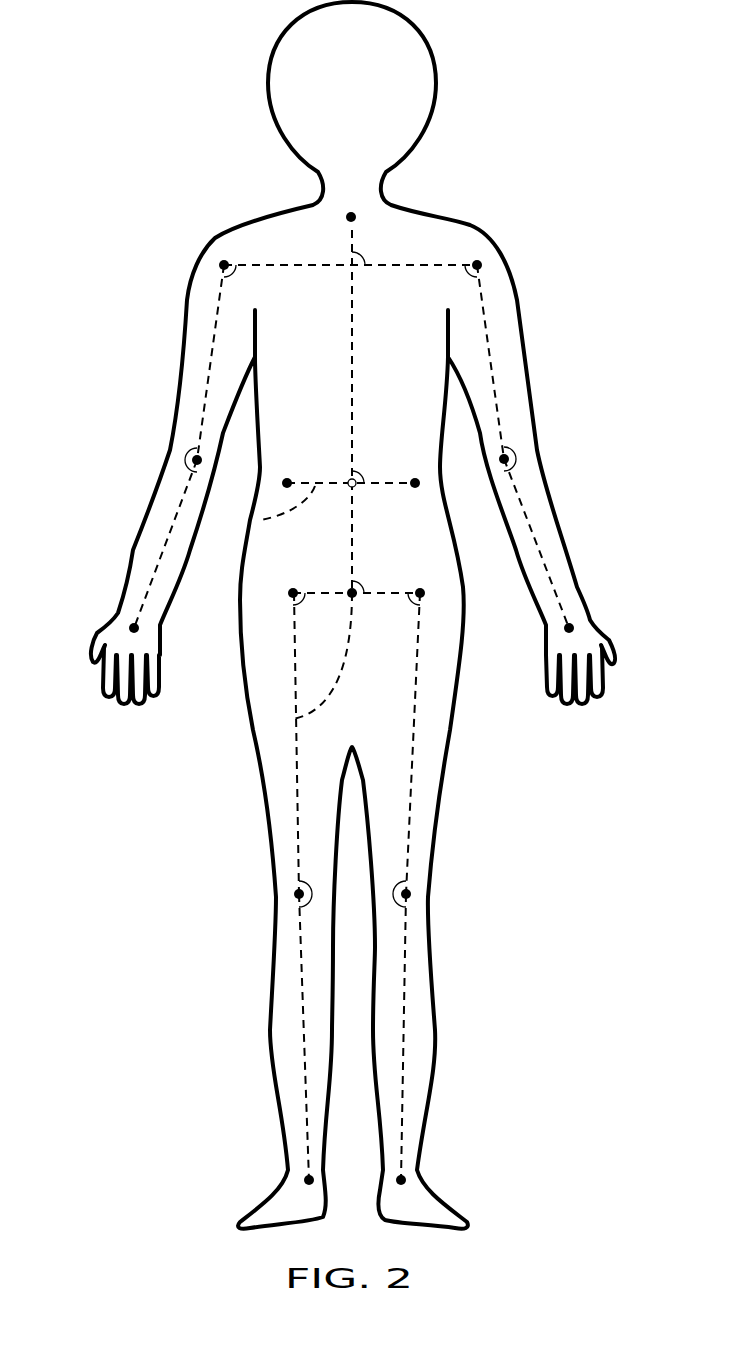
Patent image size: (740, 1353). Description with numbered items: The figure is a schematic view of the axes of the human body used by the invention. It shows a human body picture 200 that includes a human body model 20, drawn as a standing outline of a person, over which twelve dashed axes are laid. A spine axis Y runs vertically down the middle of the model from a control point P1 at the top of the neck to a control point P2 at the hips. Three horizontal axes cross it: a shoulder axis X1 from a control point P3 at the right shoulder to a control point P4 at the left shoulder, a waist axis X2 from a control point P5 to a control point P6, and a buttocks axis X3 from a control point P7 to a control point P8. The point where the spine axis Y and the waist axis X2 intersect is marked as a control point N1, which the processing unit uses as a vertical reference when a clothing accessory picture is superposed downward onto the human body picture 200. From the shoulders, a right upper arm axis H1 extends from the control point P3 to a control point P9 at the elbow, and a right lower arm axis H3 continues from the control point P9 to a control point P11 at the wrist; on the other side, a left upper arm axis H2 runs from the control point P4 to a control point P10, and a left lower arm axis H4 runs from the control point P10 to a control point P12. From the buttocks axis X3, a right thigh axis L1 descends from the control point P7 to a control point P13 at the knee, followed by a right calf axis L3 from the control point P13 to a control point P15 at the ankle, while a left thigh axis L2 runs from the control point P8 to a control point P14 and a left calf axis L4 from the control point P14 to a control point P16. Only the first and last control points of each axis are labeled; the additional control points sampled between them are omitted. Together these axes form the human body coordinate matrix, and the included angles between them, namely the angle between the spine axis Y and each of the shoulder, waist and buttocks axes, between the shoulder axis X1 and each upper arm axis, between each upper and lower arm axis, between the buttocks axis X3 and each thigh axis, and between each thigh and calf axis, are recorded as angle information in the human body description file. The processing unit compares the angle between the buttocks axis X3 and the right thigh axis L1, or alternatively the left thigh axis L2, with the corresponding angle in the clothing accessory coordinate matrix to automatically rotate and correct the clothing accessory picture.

The human body model 20 is at (469, 43).
The human body picture 200 is at (630, 1219).
The control point P1 is at (350, 200).
The control point P2 is at (351, 590).
The control point P3 is at (222, 265).
The control point P4 is at (480, 265).
The control point P5 is at (287, 480).
The control point P6 is at (415, 480).
The control point P7 is at (293, 590).
The control point P8 is at (421, 590).
The control point P9 is at (201, 461).
The control point P10 is at (500, 463).
The control point P11 is at (130, 628).
The control point P12 is at (573, 628).
The control point P13 is at (294, 894).
The control point P14 is at (397, 906).
The control point P15 is at (304, 1180).
The control point P16 is at (406, 1180).
The control point N1 is at (348, 480).
The spine axis Y is at (353, 233).
The shoulder axis X1 is at (436, 265).
The waist axis X2 is at (260, 520).
The buttocks axis X3 is at (290, 720).
The right upper arm axis H1 is at (212, 352).
The left upper arm axis H2 is at (490, 352).
The right lower arm axis H3 is at (160, 555).
The left lower arm axis H4 is at (542, 555).
The right thigh axis L1 is at (297, 770).
The left thigh axis L2 is at (412, 770).
The right calf axis L3 is at (302, 990).
The left calf axis L4 is at (406, 996).